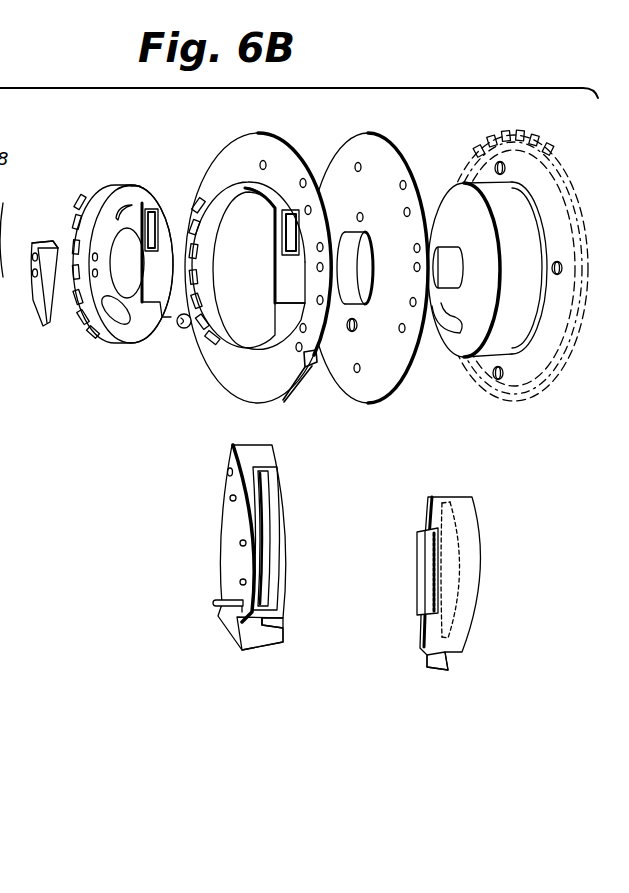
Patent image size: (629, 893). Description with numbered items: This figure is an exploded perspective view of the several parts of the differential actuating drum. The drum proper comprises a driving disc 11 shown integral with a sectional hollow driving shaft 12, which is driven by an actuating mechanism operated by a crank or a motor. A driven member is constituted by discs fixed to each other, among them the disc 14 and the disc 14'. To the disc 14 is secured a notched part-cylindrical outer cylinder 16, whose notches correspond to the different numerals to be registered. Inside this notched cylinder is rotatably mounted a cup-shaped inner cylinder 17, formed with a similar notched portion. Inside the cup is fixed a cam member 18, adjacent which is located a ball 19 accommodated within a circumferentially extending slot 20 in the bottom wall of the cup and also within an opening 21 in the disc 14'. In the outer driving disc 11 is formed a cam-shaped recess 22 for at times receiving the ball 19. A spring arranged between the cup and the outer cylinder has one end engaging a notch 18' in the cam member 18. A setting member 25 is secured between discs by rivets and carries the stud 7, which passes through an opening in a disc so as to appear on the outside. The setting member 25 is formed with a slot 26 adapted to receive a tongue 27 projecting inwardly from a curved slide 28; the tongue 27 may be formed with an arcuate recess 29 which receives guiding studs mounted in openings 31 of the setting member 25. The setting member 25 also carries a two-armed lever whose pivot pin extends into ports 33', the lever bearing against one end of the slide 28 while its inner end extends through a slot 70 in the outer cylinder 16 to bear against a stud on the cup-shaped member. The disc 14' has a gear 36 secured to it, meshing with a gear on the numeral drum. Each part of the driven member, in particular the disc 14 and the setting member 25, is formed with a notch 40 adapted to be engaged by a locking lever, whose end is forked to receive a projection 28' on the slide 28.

The stud 7 is at (215, 604).
The driving disc 11 is at (483, 236).
The sectional hollow driving shaft 12 is at (452, 258).
The disc 14 is at (258, 250).
The disc 14' is at (368, 254).
The outer cylinder 16 is at (212, 200).
The inner cylinder 17 is at (130, 190).
The cam member 18 is at (32, 284).
The notch 18' is at (49, 215).
The ball 19 is at (182, 329).
The circumferentially extending slot 20 is at (106, 326).
The opening 21 is at (350, 332).
The cam-shaped recess 22 is at (441, 327).
The setting member 25 is at (285, 590).
The slot 26 is at (272, 570).
The tongue 27 is at (418, 600).
The curved slide 28 is at (468, 583).
The projection 28' is at (416, 669).
The arcuate recess 29 is at (433, 572).
The openings 31 is at (240, 581).
The ports 33' is at (206, 488).
The gear 36 is at (541, 150).
The notch 40 is at (303, 362).
The slot 70 is at (288, 246).